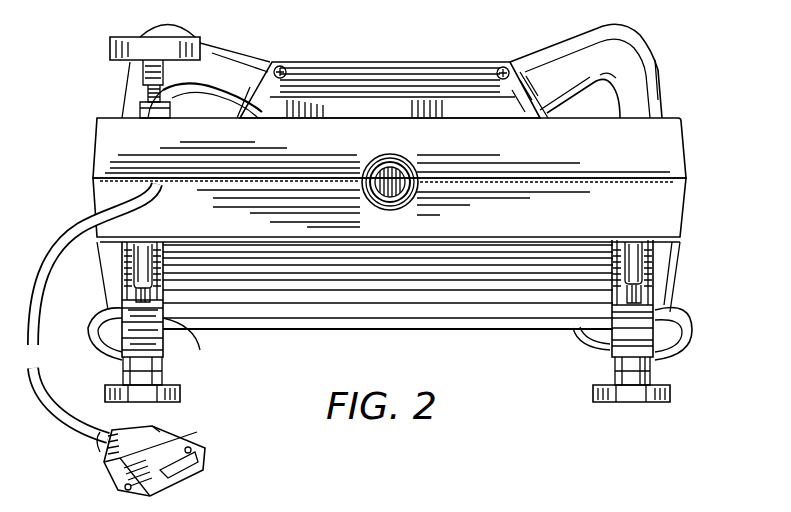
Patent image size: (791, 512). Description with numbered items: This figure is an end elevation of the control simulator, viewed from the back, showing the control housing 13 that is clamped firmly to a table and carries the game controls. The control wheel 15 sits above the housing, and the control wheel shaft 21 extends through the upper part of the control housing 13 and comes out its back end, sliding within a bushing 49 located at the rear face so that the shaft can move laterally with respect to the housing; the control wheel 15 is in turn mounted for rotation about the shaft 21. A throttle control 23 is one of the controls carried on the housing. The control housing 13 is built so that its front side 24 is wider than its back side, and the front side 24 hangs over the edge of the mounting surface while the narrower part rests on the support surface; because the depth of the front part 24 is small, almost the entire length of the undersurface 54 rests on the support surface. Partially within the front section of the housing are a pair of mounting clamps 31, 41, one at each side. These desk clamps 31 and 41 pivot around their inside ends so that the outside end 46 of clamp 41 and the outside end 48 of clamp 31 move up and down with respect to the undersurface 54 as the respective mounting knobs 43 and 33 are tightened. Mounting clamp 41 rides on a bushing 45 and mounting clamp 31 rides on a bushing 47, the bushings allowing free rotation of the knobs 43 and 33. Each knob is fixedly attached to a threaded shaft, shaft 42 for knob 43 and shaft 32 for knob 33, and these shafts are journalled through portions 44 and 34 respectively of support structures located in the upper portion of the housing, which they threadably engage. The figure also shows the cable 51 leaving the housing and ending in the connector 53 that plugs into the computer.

The control housing 13 is at (673, 148).
The control wheel 15 is at (437, 62).
The control wheel shaft 21 is at (388, 153).
The throttle control 23 is at (200, 45).
The front side 24 is at (673, 308).
The desk clamp mechanism 31 is at (152, 325).
The threaded shaft 32 is at (135, 295).
The desk clamp knob 33 is at (180, 395).
The portion of support structure 34 is at (140, 265).
The mounting clamp 41 is at (660, 340).
The threaded shaft 42 is at (638, 297).
The mounting knob 43 is at (630, 393).
The portion of support structure 44 is at (640, 263).
The bushing 45 is at (653, 363).
The outside end 46 is at (622, 327).
The bushing 47 is at (118, 365).
The outside end 48 is at (160, 325).
The bushing 49 is at (413, 165).
The cable 51 is at (80, 443).
The connector 53 is at (187, 471).
The undersurface 54 is at (590, 252).